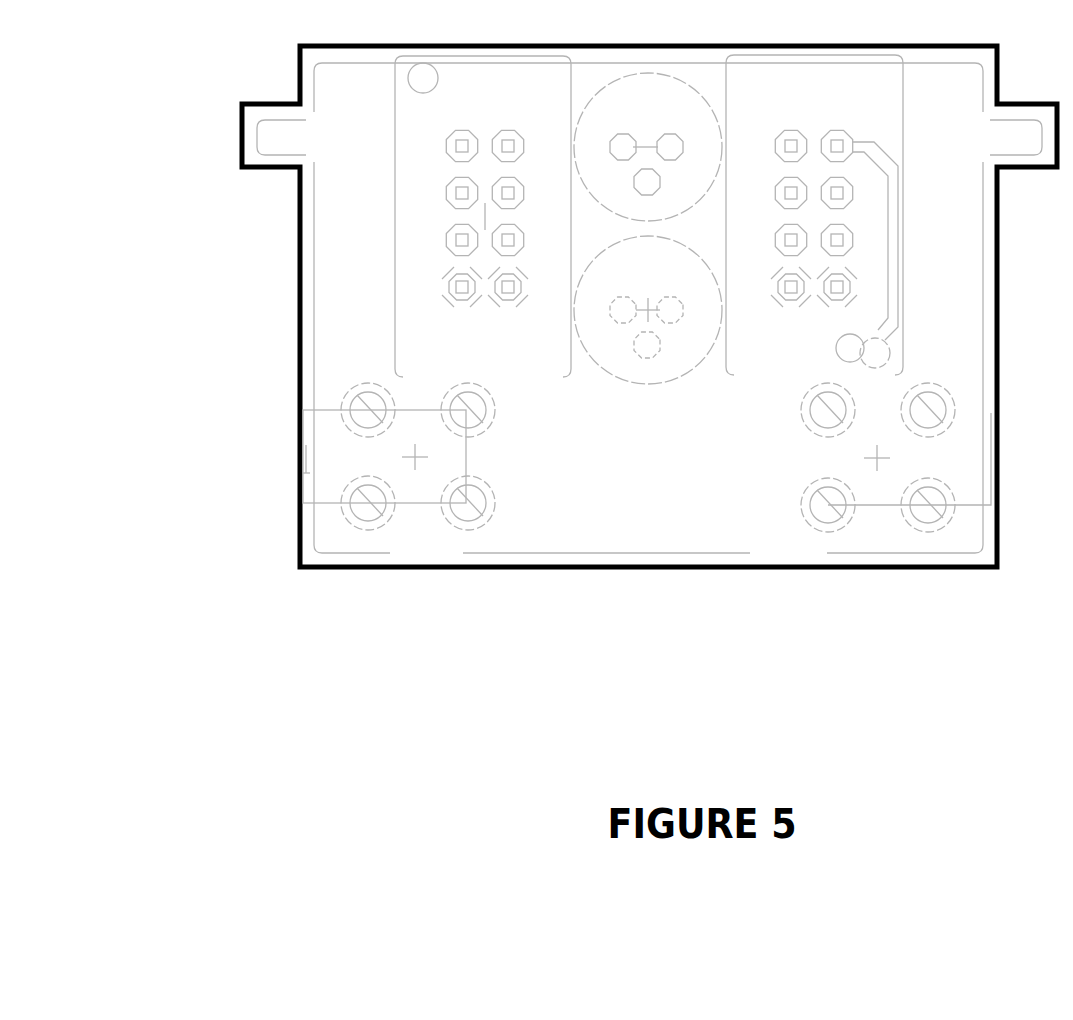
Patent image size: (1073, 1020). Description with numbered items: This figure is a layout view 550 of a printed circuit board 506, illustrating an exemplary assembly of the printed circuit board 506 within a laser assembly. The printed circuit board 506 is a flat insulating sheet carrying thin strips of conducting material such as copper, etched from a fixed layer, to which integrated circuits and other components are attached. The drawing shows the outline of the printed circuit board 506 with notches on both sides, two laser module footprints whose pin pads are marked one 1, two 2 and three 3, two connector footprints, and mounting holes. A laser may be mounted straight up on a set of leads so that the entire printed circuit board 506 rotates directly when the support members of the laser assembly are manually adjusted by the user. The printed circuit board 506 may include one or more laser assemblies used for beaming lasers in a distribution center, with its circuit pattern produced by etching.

The printed circuit board 506 is at (922, 569).
The layout view 550 is at (583, 435).
The laser pin 1 pad 1 is at (622, 236).
The laser pin 2 pad 2 is at (647, 258).
The laser pin 3 pad 3 is at (672, 236).